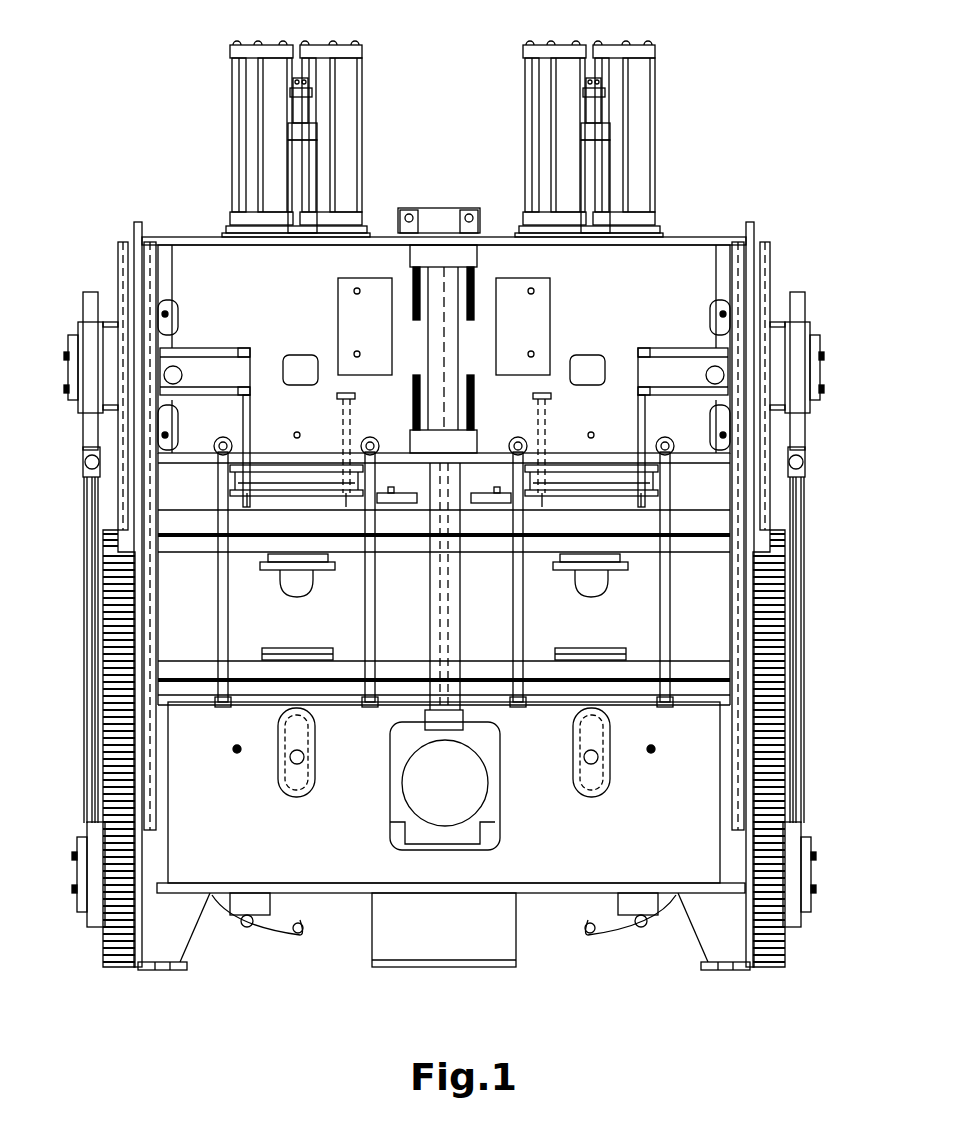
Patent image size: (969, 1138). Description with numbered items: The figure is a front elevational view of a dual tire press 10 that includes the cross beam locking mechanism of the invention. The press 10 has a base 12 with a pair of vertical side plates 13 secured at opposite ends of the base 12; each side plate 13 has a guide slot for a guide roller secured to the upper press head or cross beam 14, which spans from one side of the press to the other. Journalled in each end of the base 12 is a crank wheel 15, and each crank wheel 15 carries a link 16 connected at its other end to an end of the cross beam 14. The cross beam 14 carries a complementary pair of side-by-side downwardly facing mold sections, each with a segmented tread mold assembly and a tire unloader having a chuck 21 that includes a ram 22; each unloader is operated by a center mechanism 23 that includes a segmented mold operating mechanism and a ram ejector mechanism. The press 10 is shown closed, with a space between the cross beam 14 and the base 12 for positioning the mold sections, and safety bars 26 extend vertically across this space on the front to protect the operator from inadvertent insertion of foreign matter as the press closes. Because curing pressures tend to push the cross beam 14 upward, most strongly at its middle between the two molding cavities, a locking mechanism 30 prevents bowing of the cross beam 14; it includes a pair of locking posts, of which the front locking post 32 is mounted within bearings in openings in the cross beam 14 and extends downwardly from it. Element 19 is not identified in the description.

The press 10 is at (457, 550).
The base 12 is at (548, 838).
The side plates 13 is at (145, 600).
The cross beam 14 is at (675, 292).
The crank wheel 15 is at (115, 772).
The link 16 is at (83, 530).
The platen plate 19 is at (185, 667).
The chuck 21 is at (267, 571).
The ram 22 is at (292, 585).
The center mechanism 23 is at (222, 132).
The safety bars 26 is at (221, 627).
The locking mechanism 30 is at (445, 190).
The locking post 32 is at (442, 610).